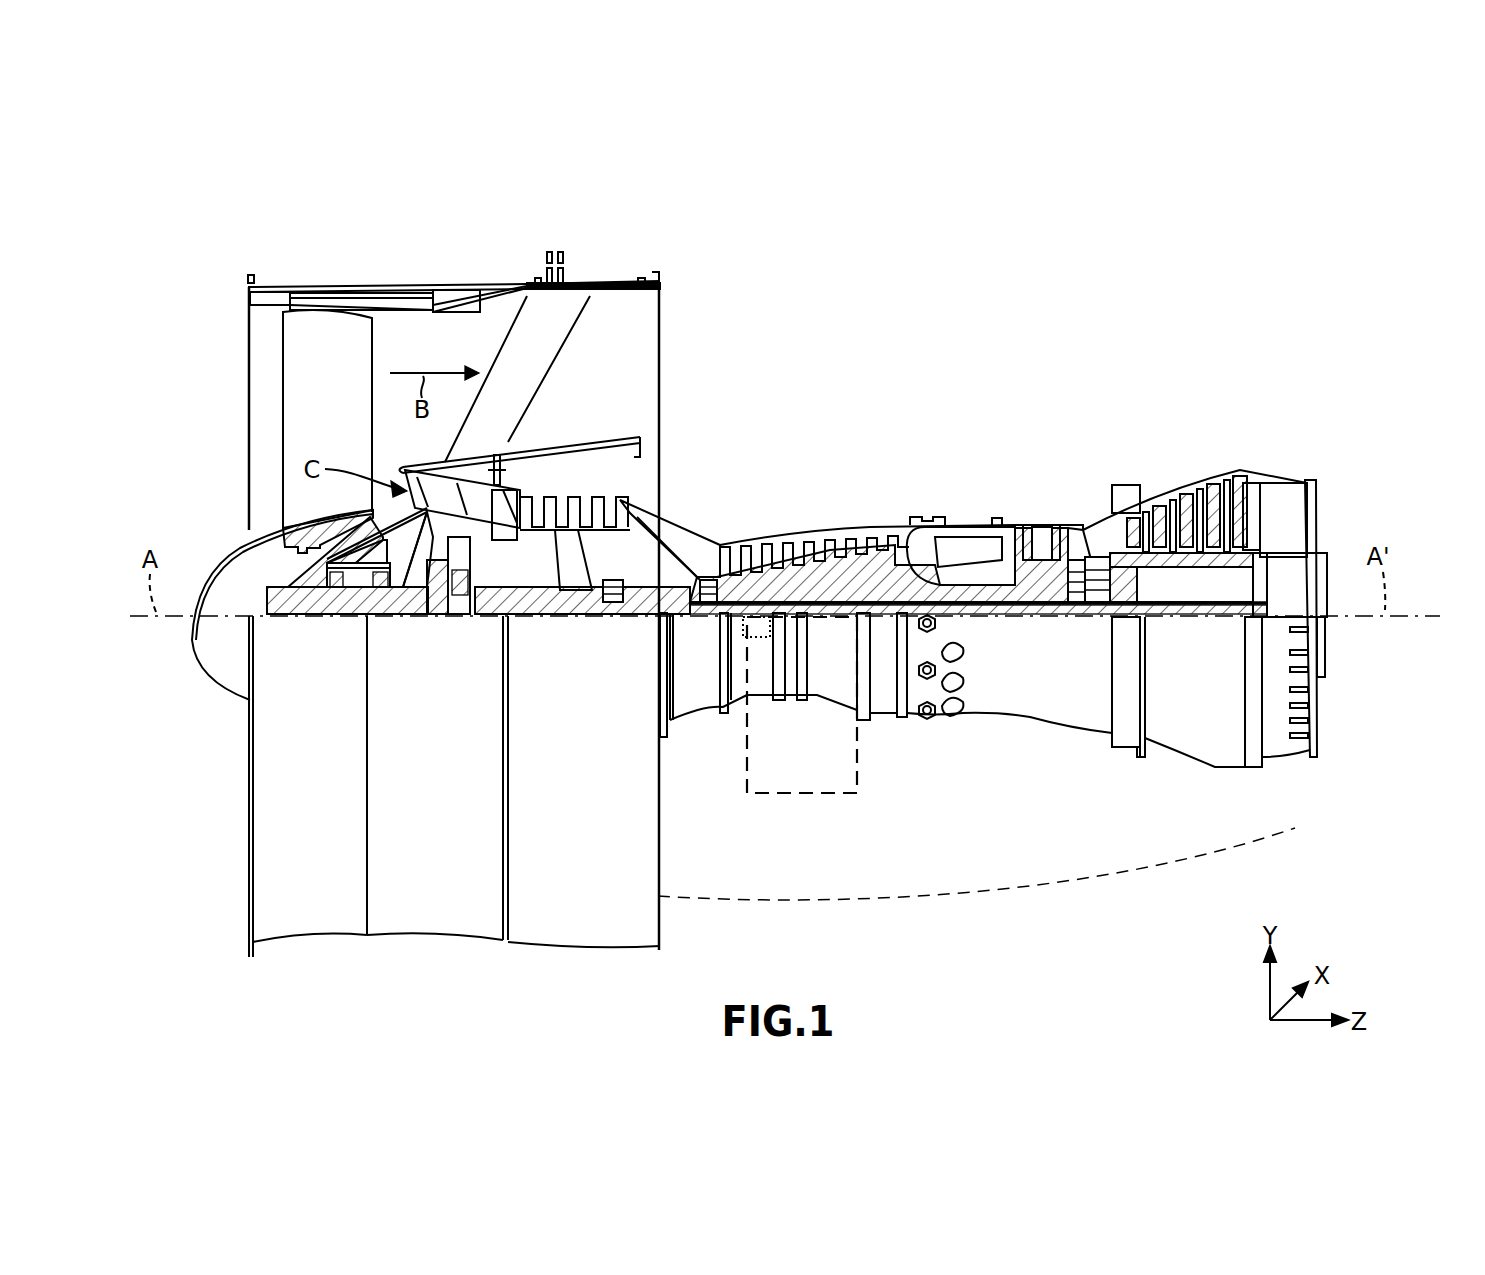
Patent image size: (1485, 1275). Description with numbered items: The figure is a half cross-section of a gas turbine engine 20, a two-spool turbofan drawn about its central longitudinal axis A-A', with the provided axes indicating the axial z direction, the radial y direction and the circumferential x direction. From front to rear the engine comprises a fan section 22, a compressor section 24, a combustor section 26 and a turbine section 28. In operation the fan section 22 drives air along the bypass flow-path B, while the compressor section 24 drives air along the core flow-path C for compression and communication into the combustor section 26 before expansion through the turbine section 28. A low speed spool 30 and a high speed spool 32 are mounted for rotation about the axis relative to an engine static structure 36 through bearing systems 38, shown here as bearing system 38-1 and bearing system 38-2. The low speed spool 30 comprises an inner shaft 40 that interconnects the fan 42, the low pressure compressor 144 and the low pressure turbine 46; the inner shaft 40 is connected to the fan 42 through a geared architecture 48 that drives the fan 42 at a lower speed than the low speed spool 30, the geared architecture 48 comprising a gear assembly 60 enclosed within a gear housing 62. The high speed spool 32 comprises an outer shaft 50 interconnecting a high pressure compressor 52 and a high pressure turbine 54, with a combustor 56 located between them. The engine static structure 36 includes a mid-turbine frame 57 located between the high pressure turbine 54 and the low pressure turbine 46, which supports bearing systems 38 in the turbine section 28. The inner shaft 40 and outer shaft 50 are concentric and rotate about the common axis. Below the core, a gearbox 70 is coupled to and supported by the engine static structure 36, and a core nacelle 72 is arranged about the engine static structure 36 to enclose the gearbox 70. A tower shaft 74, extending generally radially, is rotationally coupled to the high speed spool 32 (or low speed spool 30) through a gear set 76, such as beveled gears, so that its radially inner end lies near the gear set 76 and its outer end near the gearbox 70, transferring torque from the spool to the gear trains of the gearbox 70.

The gas turbine engine 20 is at (804, 290).
The fan section 22 is at (503, 261).
The compressor section 24 is at (510, 400).
The combustor section 26 is at (910, 400).
The turbine section 28 is at (1250, 400).
The low speed spool 30 is at (651, 630).
The high speed spool 32 is at (880, 592).
The engine static structure 36 is at (1013, 698).
The bearing system 38 is at (1083, 604).
The bearing system 38-1 is at (330, 596).
The bearing system 38-2 is at (607, 608).
The inner shaft 40 is at (873, 614).
The fan 42 is at (309, 418).
The low pressure turbine 46 is at (1178, 494).
The geared architecture 48 is at (465, 640).
The outer shaft 50 is at (962, 603).
The high pressure compressor 52 is at (815, 537).
The high pressure turbine 54 is at (1040, 525).
The combustor 56 is at (960, 550).
The mid-turbine frame 57 is at (1080, 568).
The gear assembly 60 is at (463, 603).
The gear housing 62 is at (470, 557).
The gearbox 70 is at (752, 797).
The core nacelle 72 is at (1100, 882).
The tower shaft 74 is at (737, 674).
The gear set 76 is at (743, 632).
The low pressure compressor 144 is at (590, 503).